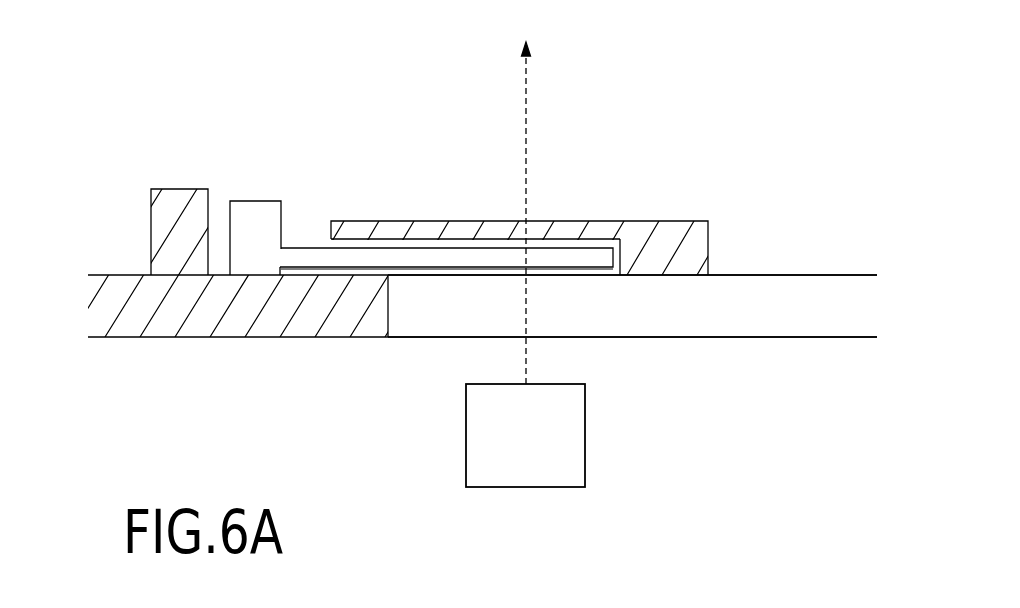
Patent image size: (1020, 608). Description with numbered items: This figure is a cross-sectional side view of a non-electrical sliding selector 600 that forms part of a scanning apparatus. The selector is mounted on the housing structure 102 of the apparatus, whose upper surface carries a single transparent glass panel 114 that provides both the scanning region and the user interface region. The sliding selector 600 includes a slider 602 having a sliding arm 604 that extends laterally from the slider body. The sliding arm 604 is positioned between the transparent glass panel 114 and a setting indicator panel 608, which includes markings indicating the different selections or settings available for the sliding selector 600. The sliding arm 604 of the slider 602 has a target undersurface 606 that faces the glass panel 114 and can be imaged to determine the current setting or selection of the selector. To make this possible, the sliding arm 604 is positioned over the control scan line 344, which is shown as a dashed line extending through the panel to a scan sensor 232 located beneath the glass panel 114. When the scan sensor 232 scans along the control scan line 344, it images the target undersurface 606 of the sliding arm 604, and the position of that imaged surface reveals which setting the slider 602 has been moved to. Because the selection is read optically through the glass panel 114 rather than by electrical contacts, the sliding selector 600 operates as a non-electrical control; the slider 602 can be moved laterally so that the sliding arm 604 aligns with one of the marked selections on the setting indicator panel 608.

The housing structure 102 is at (129, 274).
The transparent panel 114 is at (796, 274).
The scan sensor 232 is at (585, 441).
The control scan line 344 is at (527, 193).
The non-electrical sliding selector 600 is at (330, 159).
The slider 602 is at (254, 201).
The sliding arm 604 is at (563, 247).
The target undersurface 606 is at (577, 268).
The setting indicator panel 608 is at (672, 221).